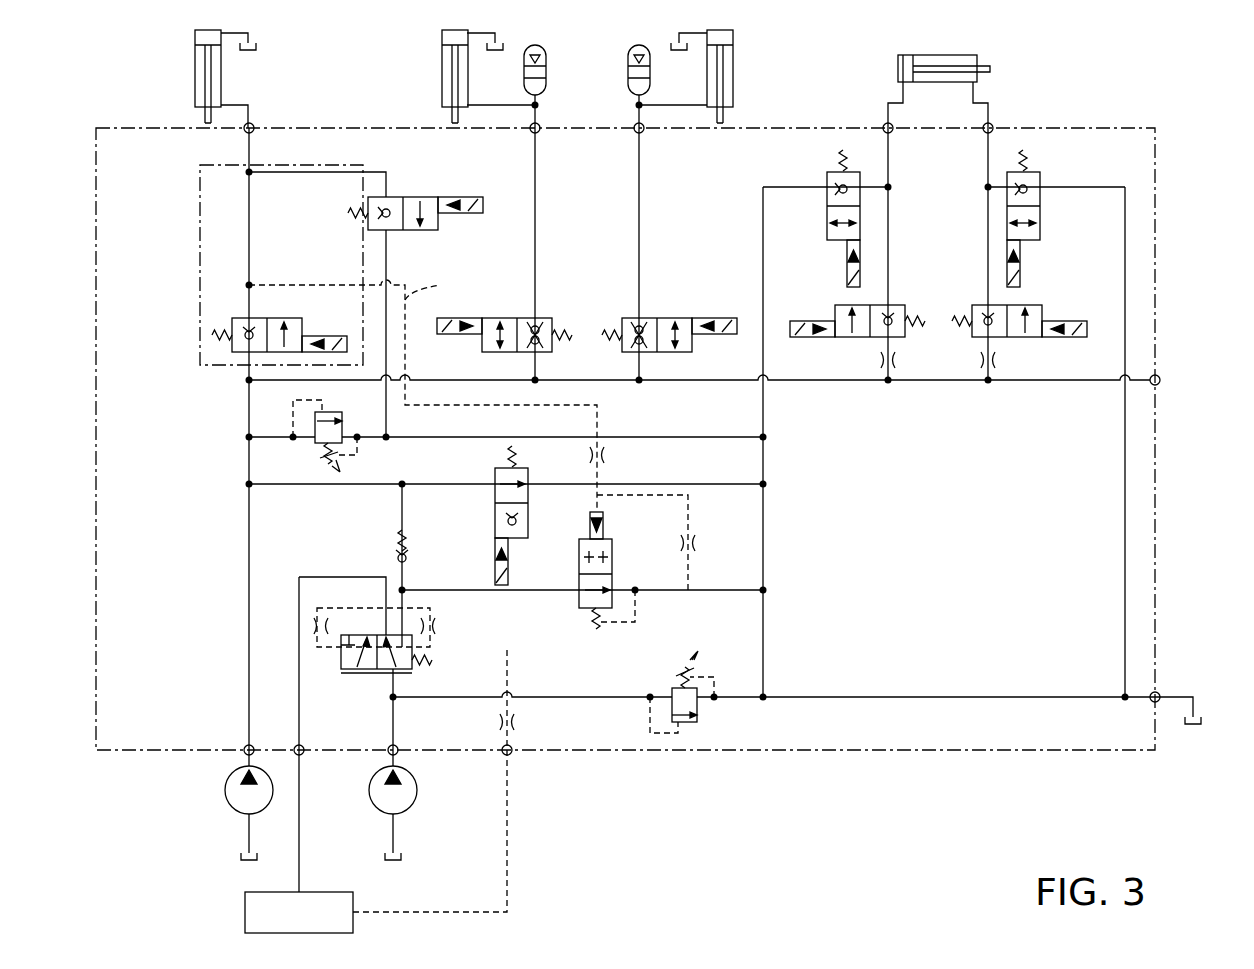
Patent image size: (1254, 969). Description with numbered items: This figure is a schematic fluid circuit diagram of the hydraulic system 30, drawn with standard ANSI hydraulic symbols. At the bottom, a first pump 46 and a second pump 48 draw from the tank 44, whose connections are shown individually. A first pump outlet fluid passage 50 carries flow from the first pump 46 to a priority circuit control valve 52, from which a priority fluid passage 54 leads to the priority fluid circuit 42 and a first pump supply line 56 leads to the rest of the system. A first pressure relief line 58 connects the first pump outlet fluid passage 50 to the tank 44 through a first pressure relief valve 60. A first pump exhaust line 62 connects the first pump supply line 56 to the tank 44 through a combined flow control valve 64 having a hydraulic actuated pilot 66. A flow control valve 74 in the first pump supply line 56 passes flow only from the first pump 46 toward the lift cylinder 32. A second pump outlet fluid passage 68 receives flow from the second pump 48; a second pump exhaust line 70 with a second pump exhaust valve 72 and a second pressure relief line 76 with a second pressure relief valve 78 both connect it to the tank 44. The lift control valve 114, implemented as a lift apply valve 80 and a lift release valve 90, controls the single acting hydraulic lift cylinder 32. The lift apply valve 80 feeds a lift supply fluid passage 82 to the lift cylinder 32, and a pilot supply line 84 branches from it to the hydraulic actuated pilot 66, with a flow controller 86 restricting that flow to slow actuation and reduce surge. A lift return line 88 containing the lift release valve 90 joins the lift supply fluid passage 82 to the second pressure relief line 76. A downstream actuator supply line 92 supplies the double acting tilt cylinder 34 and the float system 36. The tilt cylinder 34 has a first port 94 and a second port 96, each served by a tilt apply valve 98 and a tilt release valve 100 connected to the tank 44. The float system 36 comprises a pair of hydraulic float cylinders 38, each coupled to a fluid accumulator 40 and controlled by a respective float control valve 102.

The hydraulic system 30 is at (782, 860).
The hydraulic lift cylinder 32 is at (195, 82).
The hydraulic tilt cylinder 34 is at (930, 55).
The float system 36 is at (582, 80).
The hydraulic float cylinder 38 is at (442, 84).
The fluid accumulator 40 is at (542, 96).
The priority fluid circuit 42 is at (379, 790).
The tank 44 is at (254, 52).
The first pump 46 is at (417, 800).
The second pump 48 is at (226, 805).
The first pump outlet fluid passage 50 is at (397, 725).
The priority circuit control valve 52 is at (368, 672).
The priority fluid passage 54 is at (300, 725).
The first pump supply line 56 is at (392, 576).
The first pressure relief line 58 is at (743, 695).
The first pressure relief valve 60 is at (700, 720).
The first pump exhaust line 62 is at (505, 595).
The combined flow control valve 64 is at (585, 612).
The hydraulic actuated pilot 66 is at (604, 522).
The second pump outlet fluid passage 68 is at (249, 660).
The second pump exhaust line 70 is at (302, 484).
The second pump exhaust valve 72 is at (495, 505).
The flow control valve 74 is at (410, 560).
The second pressure relief line 76 is at (418, 440).
The second pressure relief valve 78 is at (330, 412).
The lift apply valve 80 is at (292, 318).
The lift supply fluid passage 82 is at (249, 238).
The pilot supply line 84 is at (472, 430).
The flow controller 86 is at (605, 456).
The lift return line 88 is at (284, 174).
The lift release valve 90 is at (400, 197).
The downstream actuator supply line 92 is at (658, 383).
The first port 94 is at (898, 86).
The second port 96 is at (977, 82).
The tilt apply valve 98 is at (845, 340).
The tilt release valve 100 is at (827, 215).
The float control valve 102 is at (515, 318).
The lift control valve 114 is at (207, 368).